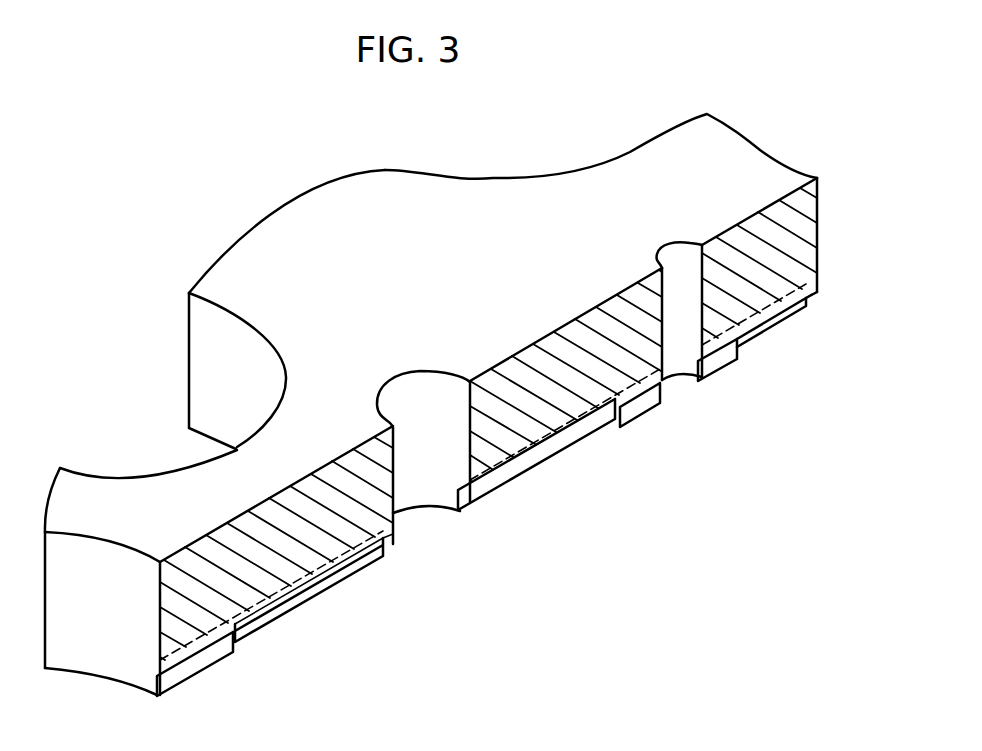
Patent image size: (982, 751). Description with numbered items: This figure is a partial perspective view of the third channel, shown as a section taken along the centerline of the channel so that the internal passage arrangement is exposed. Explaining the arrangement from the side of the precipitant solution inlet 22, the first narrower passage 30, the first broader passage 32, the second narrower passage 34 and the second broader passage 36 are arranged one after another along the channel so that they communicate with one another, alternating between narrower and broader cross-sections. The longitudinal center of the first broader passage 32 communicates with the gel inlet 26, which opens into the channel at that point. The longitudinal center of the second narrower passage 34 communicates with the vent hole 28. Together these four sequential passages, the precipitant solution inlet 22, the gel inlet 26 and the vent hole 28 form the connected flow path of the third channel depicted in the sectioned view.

The precipitant solution inlet 22 is at (133, 572).
The gel inlet 26 is at (430, 391).
The vent hole 28 is at (682, 260).
The first narrower passage 30 is at (200, 665).
The first broader passage 32 is at (317, 594).
The second narrower passage 34 is at (648, 403).
The second broader passage 36 is at (767, 327).